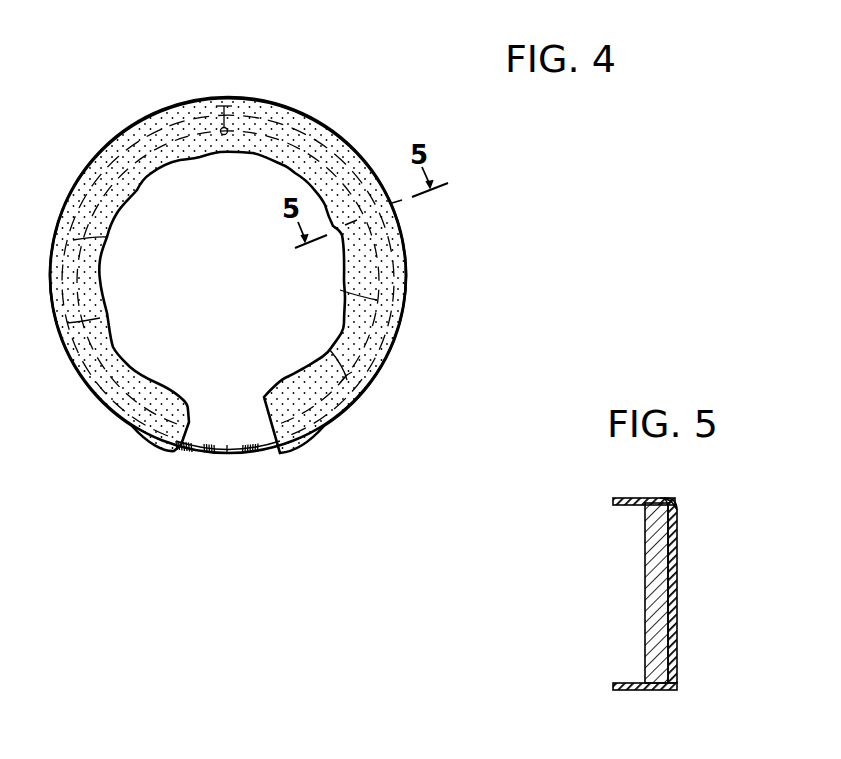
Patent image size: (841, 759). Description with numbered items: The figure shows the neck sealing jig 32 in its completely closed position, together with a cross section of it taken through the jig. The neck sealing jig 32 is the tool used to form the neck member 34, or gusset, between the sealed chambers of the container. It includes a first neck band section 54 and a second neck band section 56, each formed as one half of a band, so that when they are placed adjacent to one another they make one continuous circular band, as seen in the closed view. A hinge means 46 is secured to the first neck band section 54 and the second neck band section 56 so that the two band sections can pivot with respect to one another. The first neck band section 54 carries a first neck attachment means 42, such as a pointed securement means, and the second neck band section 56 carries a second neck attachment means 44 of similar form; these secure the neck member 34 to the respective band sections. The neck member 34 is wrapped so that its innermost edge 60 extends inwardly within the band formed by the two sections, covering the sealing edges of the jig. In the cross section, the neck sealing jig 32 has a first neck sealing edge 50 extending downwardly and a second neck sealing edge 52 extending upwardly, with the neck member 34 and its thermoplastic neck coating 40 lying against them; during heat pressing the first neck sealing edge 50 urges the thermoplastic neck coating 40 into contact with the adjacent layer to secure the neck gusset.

In FIG. 4, the neck sealing jig 32 is at (210, 458).
In FIG. 5, the neck sealing jig 32 is at (655, 575).
In FIG. 4, the neck member 34 is at (285, 105).
In FIG. 5, the neck member 34 is at (677, 572).
In FIG. 5, the thermoplastic neck coating 40 is at (627, 507).
In FIG. 4, the first neck attachment means 42 is at (152, 450).
In FIG. 4, the second neck attachment means 44 is at (298, 447).
In FIG. 4, the hinge means 46 is at (224, 136).
In FIG. 4, the first neck sealing edge 50 is at (100, 318).
In FIG. 5, the first neck sealing edge 50 is at (660, 498).
In FIG. 5, the second neck sealing edge 52 is at (657, 690).
In FIG. 4, the first neck band section 54 is at (108, 237).
In FIG. 4, the second neck band section 56 is at (340, 290).
In FIG. 4, the innermost edge 60 is at (278, 390).